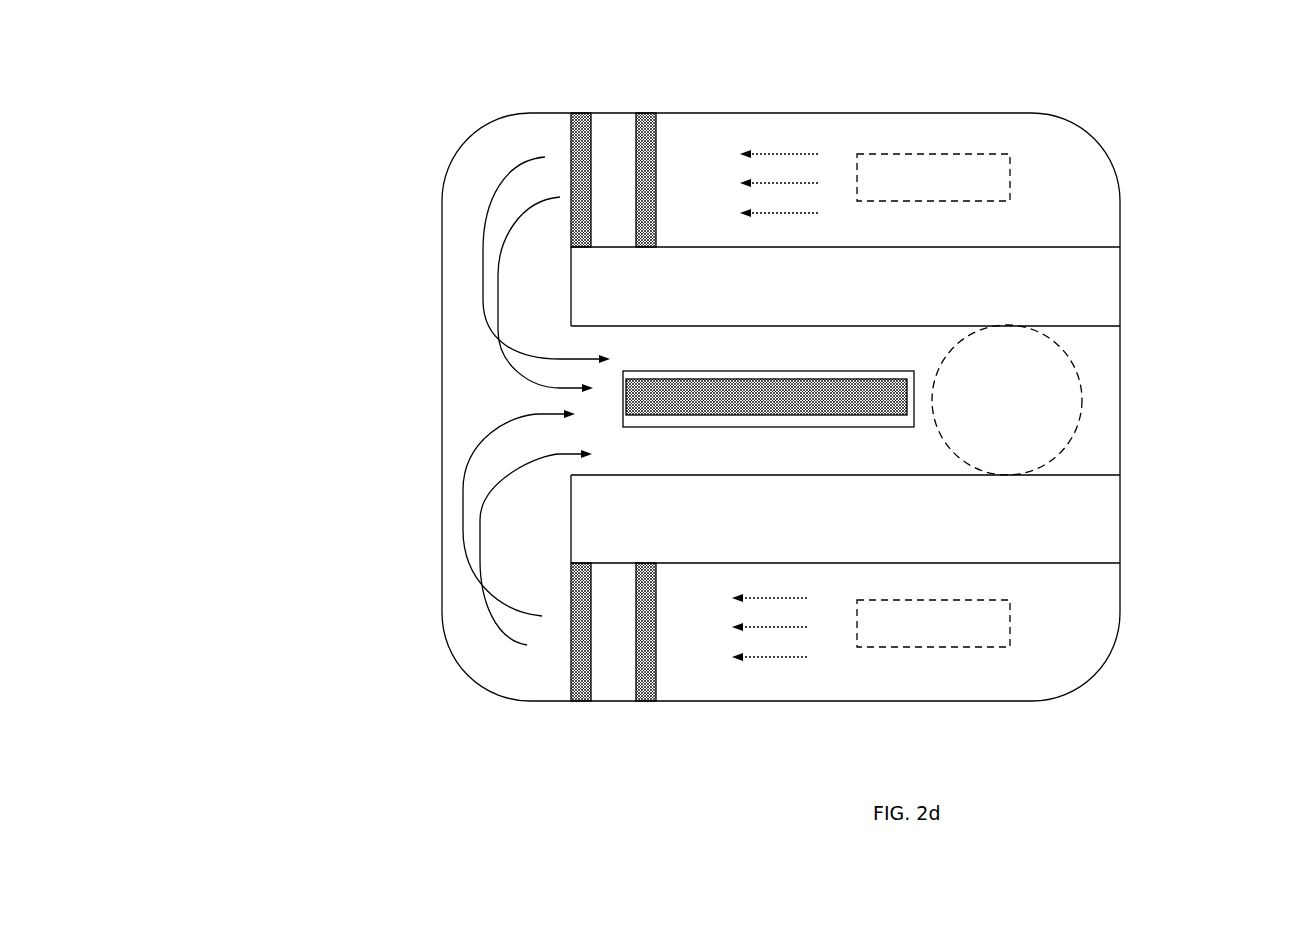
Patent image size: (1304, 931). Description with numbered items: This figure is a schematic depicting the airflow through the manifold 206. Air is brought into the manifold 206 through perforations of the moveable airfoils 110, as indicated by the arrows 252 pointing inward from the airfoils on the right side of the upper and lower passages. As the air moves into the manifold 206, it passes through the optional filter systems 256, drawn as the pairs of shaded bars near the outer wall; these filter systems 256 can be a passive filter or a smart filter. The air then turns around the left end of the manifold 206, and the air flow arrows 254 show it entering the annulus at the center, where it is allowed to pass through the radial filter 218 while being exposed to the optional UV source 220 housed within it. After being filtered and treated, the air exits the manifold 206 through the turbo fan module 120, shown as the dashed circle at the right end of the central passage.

The manifold 206 is at (442, 470).
The filter systems 256 is at (643, 162).
The arrows 252 is at (797, 154).
The moveable airfoils 110 is at (1026, 144).
The turbo fan module 120 is at (1090, 355).
The radial filter 218 is at (819, 427).
The UV source 220 is at (830, 403).
The air flow arrows 254 is at (536, 401).